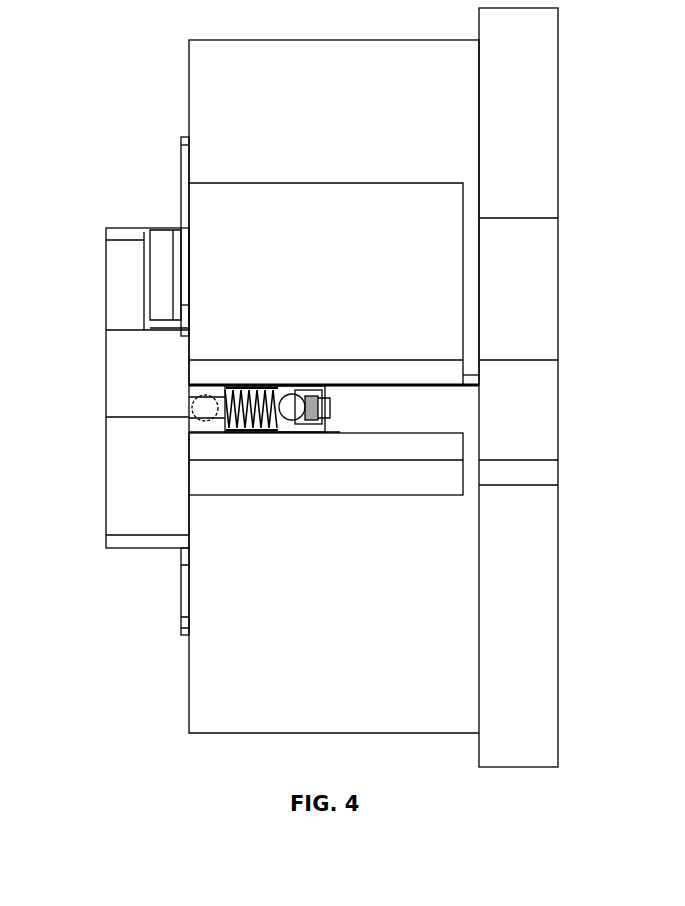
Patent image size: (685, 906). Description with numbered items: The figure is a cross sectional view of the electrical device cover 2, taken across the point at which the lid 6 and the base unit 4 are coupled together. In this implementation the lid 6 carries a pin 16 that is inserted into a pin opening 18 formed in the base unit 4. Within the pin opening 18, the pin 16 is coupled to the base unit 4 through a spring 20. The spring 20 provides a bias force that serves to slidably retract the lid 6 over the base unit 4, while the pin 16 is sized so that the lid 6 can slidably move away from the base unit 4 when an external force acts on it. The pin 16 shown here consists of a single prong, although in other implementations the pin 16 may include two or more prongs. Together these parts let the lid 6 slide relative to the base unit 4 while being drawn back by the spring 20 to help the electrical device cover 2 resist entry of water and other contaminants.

The electrical device cover 2 is at (163, 118).
The base unit 4 is at (222, 700).
The lid 6 is at (541, 165).
The pin 16 is at (430, 410).
The pin opening 18 is at (305, 432).
The spring 20 is at (235, 395).